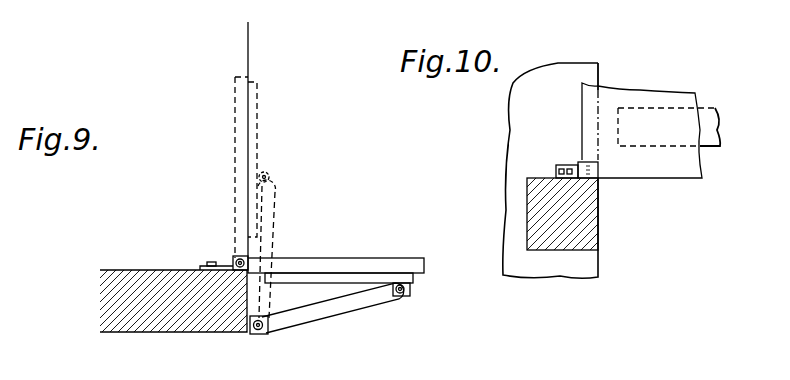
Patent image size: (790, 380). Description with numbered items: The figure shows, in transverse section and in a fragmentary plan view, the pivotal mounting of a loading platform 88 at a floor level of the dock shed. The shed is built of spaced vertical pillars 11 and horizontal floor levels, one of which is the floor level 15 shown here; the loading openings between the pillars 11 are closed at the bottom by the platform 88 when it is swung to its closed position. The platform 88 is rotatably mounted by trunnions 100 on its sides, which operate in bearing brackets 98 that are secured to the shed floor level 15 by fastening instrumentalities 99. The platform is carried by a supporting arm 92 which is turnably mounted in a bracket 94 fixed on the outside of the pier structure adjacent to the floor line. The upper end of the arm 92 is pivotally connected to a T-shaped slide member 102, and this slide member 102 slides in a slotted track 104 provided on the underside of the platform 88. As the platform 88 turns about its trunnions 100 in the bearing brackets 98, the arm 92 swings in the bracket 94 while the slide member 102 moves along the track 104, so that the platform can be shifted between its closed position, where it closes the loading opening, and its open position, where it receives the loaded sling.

In FIG. 10, the vertical pillar 11 is at (598, 233).
In FIG. 9, the horizontal floor level 15 is at (209, 328).
In FIG. 10, the horizontal floor level 15 is at (580, 270).
In FIG. 9, the loading platform 88 is at (238, 75).
In FIG. 10, the loading platform 88 is at (641, 178).
In FIG. 9, the supporting arm 92 is at (276, 229).
In FIG. 9, the bracket 94 is at (258, 335).
In FIG. 9, the bearing bracket 98 is at (222, 266).
In FIG. 10, the bearing bracket 98 is at (569, 165).
In FIG. 9, the fastening instrumentality 99 is at (211, 267).
In FIG. 10, the fastening instrumentality 99 is at (560, 172).
In FIG. 9, the trunnion 100 is at (236, 258).
In FIG. 10, the trunnion 100 is at (600, 168).
In FIG. 9, the T-shaped slide member 102 is at (266, 172).
In FIG. 9, the slotted track 104 is at (258, 108).
In FIG. 10, the slotted track 104 is at (704, 108).